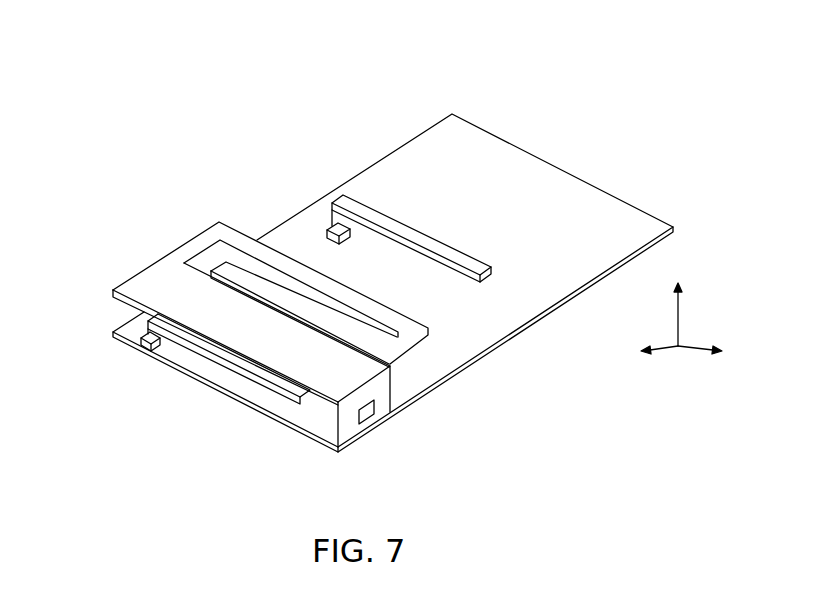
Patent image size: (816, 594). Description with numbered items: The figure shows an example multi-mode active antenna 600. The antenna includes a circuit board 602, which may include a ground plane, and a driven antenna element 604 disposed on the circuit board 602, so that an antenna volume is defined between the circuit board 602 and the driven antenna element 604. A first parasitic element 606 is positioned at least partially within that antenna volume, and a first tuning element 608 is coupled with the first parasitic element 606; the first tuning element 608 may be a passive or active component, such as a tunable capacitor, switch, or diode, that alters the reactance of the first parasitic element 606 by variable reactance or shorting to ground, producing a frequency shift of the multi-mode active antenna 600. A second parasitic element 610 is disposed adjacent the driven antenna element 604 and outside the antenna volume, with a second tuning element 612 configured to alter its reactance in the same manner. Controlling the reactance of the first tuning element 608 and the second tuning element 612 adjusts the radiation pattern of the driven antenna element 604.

The multi-mode active antenna 600 is at (140, 150).
The circuit board 602 is at (374, 163).
The driven antenna element 604 is at (170, 252).
The first parasitic element 606 is at (257, 384).
The first tuning element 608 is at (143, 341).
The second parasitic element 610 is at (435, 240).
The second tuning element 612 is at (351, 235).